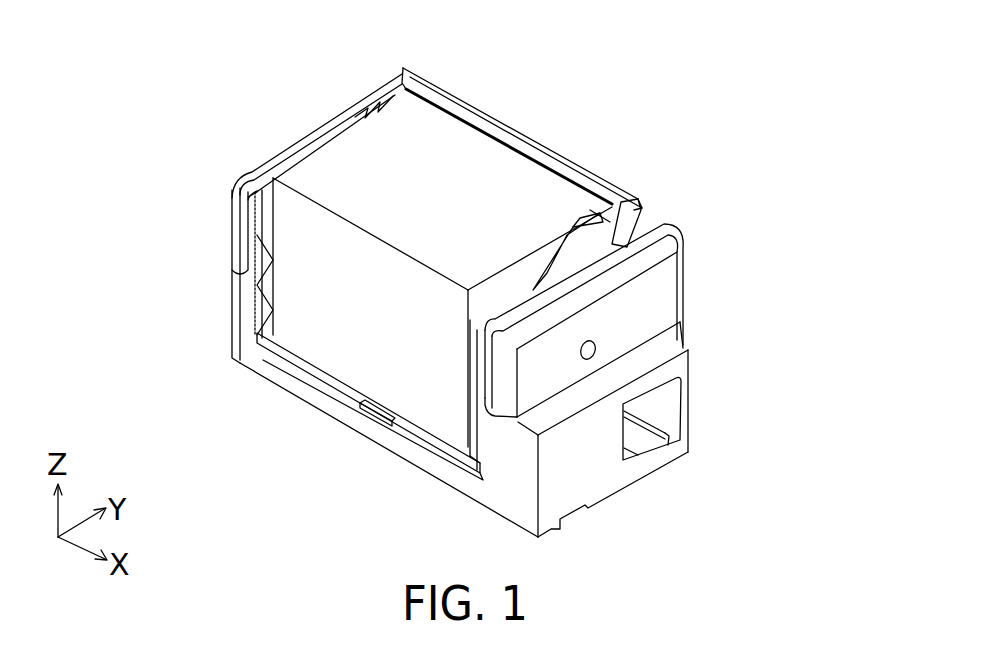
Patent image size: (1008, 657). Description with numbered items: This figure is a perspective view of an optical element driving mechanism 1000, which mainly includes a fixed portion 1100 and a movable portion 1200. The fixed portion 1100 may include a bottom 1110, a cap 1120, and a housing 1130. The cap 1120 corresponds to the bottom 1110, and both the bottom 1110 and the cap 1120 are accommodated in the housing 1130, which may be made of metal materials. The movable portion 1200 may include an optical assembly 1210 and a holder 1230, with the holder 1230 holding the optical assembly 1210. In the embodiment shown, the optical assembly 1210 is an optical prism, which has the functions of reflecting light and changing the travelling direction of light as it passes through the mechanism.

The optical element driving mechanism 1000 is at (142, 47).
The fixed portion 1100 is at (812, 2).
The bottom 1110 is at (596, 476).
The cap 1120 is at (262, 218).
The housing 1130 is at (642, 300).
The movable portion 1200 is at (812, 125).
The optical assembly 1210 is at (357, 160).
The holder 1230 is at (440, 88).